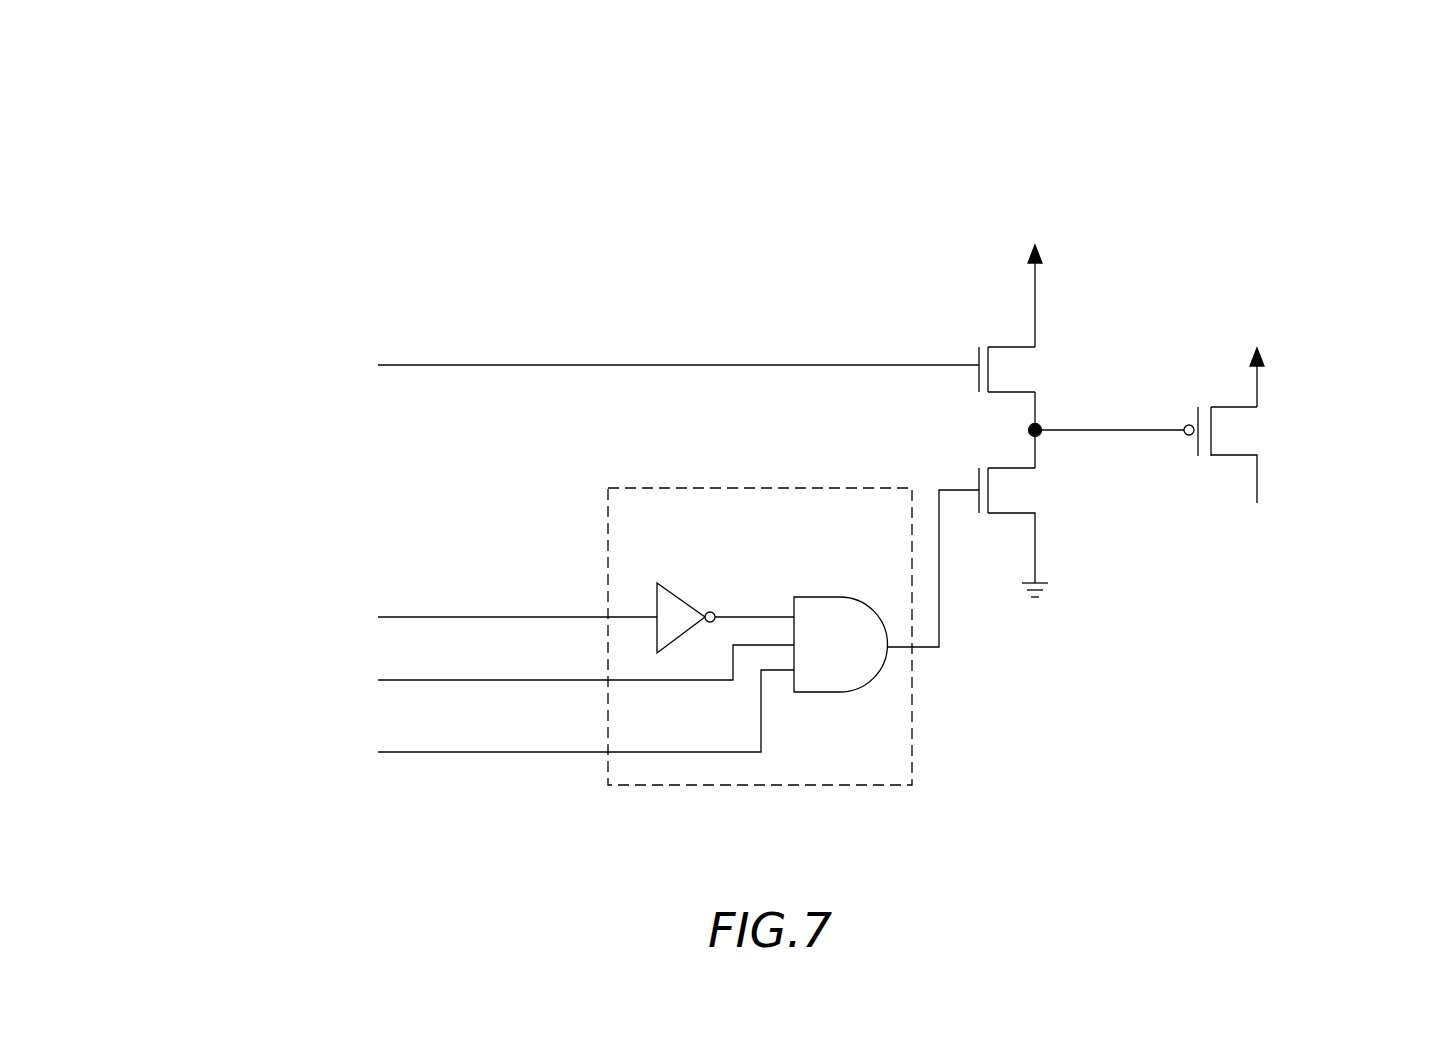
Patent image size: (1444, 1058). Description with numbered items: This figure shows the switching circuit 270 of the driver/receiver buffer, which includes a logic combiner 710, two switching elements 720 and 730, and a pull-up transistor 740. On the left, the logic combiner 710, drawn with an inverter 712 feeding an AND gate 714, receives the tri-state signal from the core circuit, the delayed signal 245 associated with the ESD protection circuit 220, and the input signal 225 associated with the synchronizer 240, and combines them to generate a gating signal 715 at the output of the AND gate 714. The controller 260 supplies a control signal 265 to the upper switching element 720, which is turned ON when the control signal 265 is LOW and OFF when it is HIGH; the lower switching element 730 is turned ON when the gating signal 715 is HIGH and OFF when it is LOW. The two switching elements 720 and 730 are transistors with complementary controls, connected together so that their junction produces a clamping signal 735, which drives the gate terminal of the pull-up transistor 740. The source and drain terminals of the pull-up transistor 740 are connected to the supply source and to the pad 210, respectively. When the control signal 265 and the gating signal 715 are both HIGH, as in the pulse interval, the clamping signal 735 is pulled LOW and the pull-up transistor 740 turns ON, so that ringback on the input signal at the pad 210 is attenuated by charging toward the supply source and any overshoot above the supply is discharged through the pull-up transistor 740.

The switching circuit 270 is at (1285, 151).
The controller 260 is at (243, 342).
The control signal 265 is at (640, 342).
The switching element 720 is at (1040, 356).
The switching element 730 is at (1040, 502).
The clamping signal 735 is at (1137, 447).
The pull-up transistor 740 is at (1307, 451).
The pad 210 is at (1261, 526).
The logic combiner 710 is at (818, 498).
The inverter 712 is at (673, 610).
The AND gate 714 is at (837, 610).
The gating signal 715 is at (918, 626).
The electrostatic discharge (ESD) protection circuit 220 is at (264, 651).
The delayed signal 245 is at (585, 655).
The synchronizer 240 is at (255, 721).
The input signal 225 is at (578, 725).